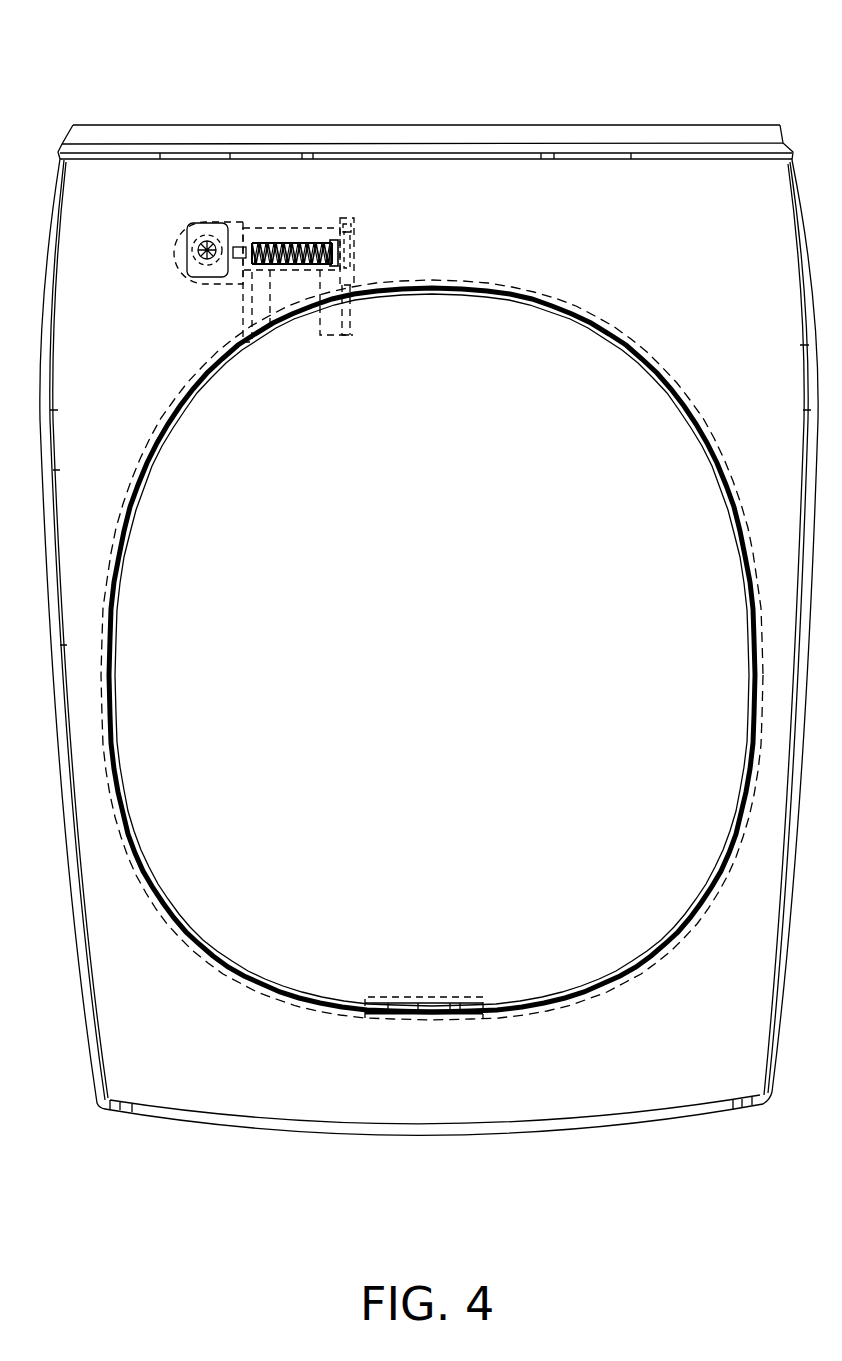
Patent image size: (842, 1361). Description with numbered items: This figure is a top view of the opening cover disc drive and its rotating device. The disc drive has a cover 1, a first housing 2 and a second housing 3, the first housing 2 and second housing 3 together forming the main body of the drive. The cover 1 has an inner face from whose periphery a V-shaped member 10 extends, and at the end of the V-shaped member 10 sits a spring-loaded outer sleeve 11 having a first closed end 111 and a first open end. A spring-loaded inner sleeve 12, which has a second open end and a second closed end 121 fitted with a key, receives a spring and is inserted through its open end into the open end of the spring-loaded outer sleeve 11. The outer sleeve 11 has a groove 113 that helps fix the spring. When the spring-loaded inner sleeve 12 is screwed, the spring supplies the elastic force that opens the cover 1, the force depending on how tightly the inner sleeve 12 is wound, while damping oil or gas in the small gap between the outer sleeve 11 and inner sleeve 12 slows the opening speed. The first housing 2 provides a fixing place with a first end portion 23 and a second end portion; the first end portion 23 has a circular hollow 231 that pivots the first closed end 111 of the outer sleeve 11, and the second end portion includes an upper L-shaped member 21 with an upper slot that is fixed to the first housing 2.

The cover 1 is at (593, 933).
The first housing 2 is at (666, 177).
The second housing 3 is at (793, 153).
The V-shaped member 10 is at (317, 293).
The spring-loaded outer sleeve 11 is at (268, 280).
The spring-loaded inner sleeve 12 is at (225, 283).
The second closed end 121 is at (195, 258).
The upper L-shaped member 21 is at (183, 230).
The first end portion 23 is at (354, 282).
The circular hollow 231 is at (357, 250).
The first closed end 111 is at (352, 226).
The groove 113 is at (345, 233).